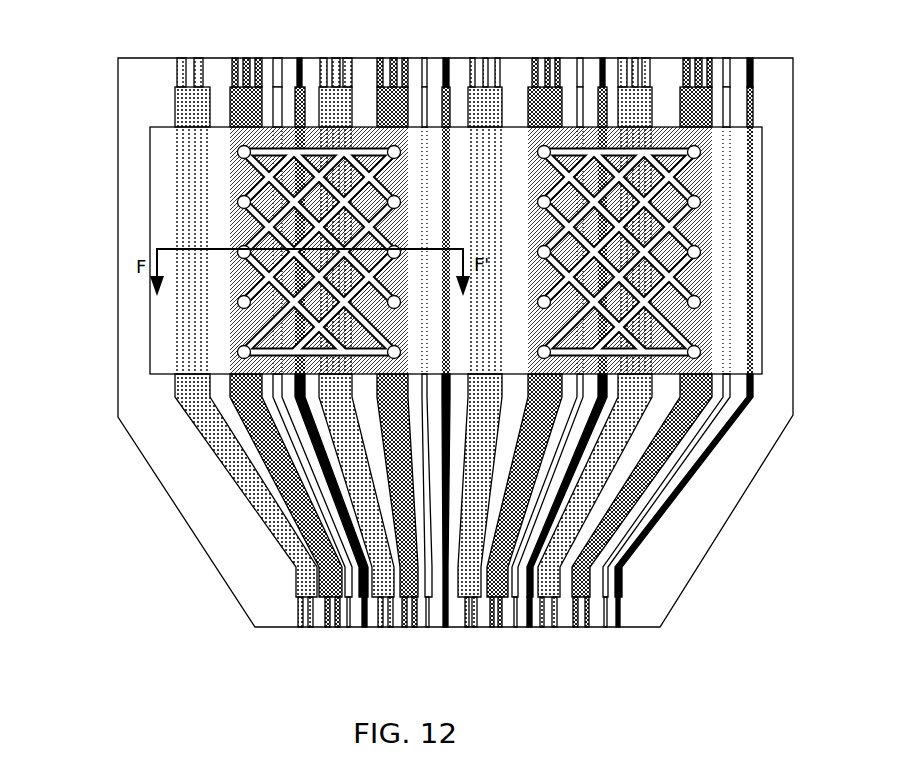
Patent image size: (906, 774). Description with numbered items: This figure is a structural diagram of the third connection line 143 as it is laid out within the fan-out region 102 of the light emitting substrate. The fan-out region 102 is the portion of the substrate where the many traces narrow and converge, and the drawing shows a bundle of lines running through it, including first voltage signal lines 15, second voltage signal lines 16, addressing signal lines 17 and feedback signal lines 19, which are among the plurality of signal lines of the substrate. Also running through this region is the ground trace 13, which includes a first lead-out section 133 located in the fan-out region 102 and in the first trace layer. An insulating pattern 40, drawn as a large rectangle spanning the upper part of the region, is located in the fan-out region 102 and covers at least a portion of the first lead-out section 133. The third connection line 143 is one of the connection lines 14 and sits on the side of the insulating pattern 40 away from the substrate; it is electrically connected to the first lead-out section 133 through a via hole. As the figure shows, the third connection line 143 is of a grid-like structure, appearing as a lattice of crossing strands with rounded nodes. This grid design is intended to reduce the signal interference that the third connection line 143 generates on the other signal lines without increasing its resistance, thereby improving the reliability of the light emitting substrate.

The fan-out region 102 is at (53, 19).
The insulating pattern 40 is at (158, 172).
The third connection line 143 is at (250, 235).
The connection lines 14 is at (396, 227).
The first voltage signal lines 15 is at (298, 596).
The first lead-out section 133 is at (332, 582).
The ground trace 13 is at (301, 366).
The addressing signal lines 17 is at (350, 582).
The second voltage signal lines 16 is at (363, 592).
The feedback signal lines 19 is at (428, 582).